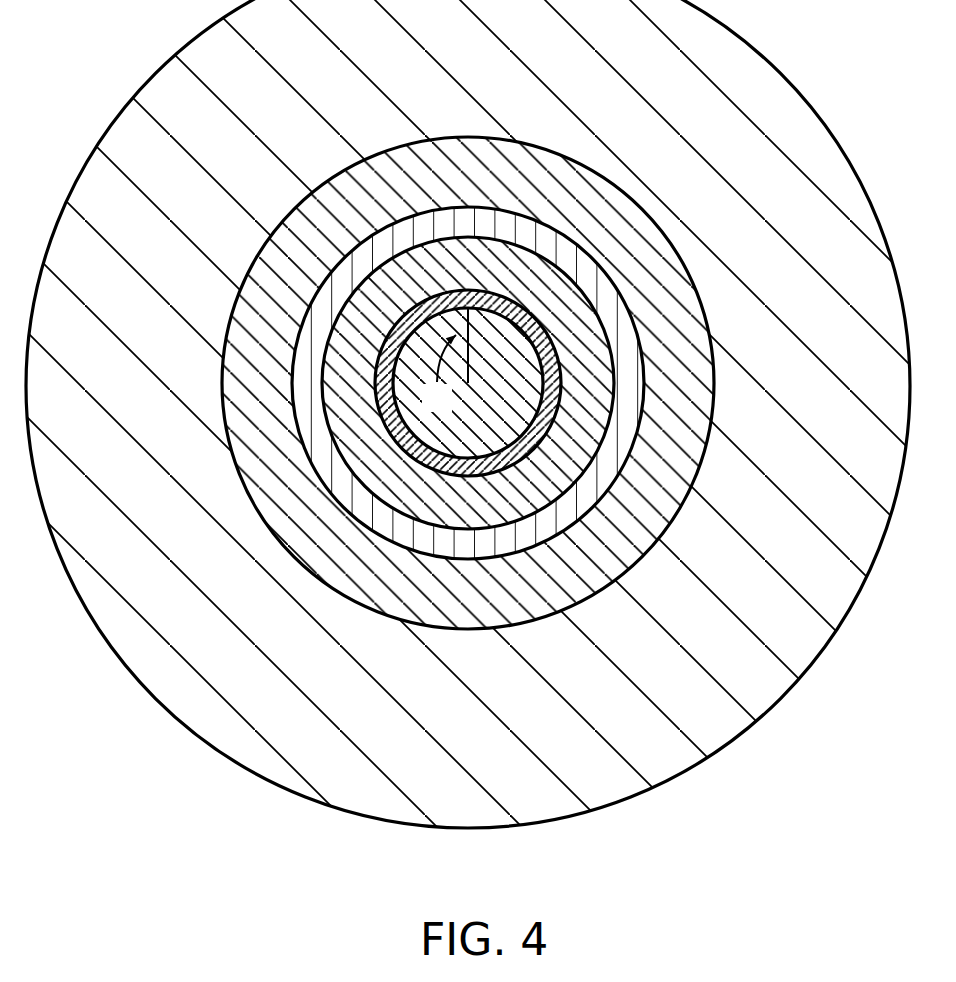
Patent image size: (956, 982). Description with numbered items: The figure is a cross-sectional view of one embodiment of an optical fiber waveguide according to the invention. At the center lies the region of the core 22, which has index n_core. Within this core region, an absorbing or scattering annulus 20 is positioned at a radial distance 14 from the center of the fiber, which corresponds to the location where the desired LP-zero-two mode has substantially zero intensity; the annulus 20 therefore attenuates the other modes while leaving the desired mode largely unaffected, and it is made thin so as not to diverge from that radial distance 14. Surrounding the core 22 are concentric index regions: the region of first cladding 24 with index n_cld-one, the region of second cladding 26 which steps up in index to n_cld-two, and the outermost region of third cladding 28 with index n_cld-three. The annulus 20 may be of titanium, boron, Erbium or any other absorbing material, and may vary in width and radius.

The radial distance a0 14 is at (469, 358).
The absorbing or scattering annulus 20 is at (531, 310).
The core 22 is at (524, 410).
The first cladding 24 is at (620, 284).
The second cladding 26 is at (696, 442).
The third cladding 28 is at (794, 461).